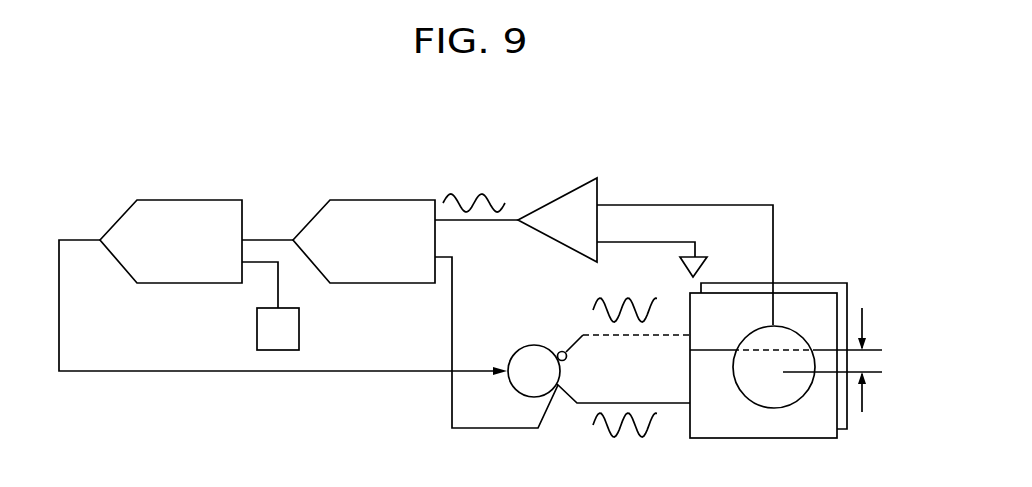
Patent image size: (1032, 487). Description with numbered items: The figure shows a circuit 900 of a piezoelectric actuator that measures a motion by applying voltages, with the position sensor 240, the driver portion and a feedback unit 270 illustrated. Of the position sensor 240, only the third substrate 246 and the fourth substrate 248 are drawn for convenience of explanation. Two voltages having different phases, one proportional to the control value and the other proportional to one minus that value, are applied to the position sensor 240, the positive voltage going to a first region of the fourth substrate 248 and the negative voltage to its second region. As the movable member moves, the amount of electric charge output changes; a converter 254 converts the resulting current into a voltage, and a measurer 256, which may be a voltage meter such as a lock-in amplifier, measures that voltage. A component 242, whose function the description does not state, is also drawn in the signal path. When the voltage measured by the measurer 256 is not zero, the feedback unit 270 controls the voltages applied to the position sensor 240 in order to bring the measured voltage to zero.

The nuclear magnetic resonance gyroscope control system 900 is at (741, 129).
The feedback unit 270 is at (203, 197).
The measurer 256 is at (365, 197).
The converter 254 is at (555, 200).
The oscillator 242 is at (518, 348).
The position sensor 240 is at (882, 243).
The third substrate 246 is at (792, 292).
The fourth substrate 248 is at (843, 283).